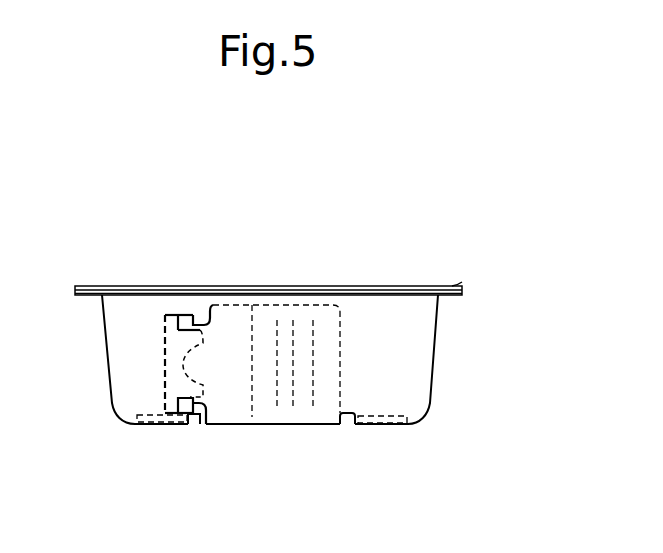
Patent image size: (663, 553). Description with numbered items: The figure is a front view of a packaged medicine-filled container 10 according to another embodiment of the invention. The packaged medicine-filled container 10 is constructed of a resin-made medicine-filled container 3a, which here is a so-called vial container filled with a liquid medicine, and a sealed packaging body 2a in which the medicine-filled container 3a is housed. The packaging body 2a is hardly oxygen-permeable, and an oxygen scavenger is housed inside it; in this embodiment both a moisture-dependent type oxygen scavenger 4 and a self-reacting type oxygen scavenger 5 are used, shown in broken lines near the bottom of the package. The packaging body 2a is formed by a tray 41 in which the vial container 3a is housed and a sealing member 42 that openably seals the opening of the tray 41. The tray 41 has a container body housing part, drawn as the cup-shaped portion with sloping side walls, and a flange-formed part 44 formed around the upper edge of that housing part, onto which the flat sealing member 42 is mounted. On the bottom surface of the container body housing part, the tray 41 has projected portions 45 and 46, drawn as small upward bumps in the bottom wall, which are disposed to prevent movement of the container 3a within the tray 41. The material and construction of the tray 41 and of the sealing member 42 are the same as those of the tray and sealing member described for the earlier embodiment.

The packaged medicine-filled container 10 is at (215, 257).
The packaging body 2a is at (408, 390).
The medicine-filled container 3a is at (253, 392).
The moisture-dependent type oxygen scavenger 4 is at (150, 427).
The self-reacting type oxygen scavenger 5 is at (393, 423).
The tray 41 is at (402, 351).
The sealing member 42 is at (427, 288).
The flange-formed part 44 is at (138, 295).
The projected portion 45 is at (200, 420).
The projected portion 46 is at (347, 420).